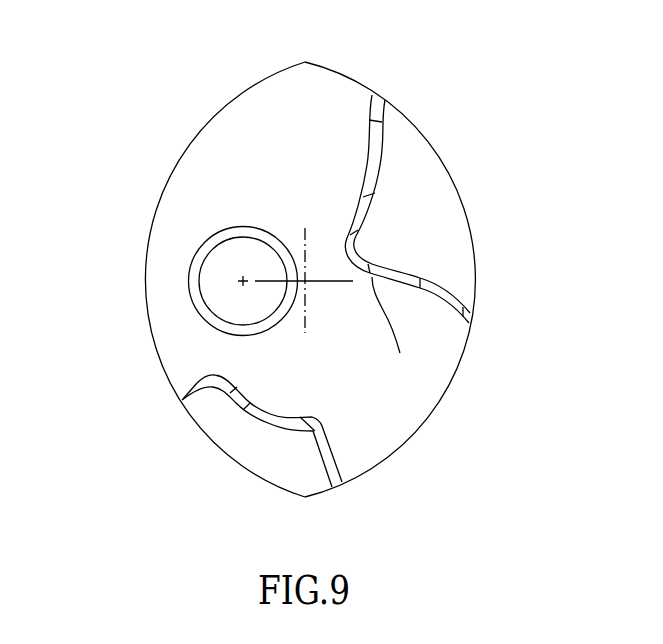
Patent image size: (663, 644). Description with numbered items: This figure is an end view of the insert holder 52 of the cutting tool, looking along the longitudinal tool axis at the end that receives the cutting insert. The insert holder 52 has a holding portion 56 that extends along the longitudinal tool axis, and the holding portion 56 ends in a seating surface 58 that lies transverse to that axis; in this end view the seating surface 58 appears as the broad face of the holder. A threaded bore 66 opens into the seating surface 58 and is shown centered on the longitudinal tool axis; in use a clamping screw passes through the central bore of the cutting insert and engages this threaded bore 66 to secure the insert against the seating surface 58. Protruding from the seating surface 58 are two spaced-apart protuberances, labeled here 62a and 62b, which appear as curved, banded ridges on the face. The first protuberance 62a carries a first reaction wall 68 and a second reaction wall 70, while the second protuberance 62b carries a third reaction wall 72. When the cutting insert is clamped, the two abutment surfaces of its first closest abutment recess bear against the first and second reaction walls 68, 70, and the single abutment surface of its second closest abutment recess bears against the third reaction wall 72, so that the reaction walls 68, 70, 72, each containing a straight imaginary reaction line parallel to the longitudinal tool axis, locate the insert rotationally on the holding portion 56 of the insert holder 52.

The insert holder 52 is at (288, 294).
The holding portion 56 is at (178, 155).
The seating surface 58 is at (363, 383).
The first chip groove 62a is at (212, 449).
The second chip groove 62b is at (405, 222).
The threaded bore 66 is at (196, 306).
The first reaction wall 68 is at (197, 385).
The second reaction wall 70 is at (251, 400).
The third reaction wall 72 is at (393, 329).